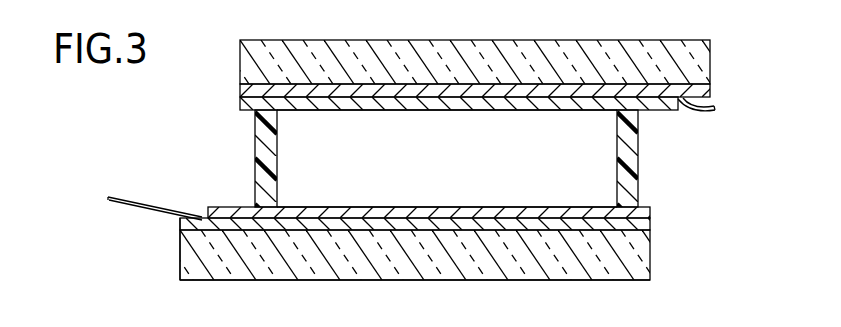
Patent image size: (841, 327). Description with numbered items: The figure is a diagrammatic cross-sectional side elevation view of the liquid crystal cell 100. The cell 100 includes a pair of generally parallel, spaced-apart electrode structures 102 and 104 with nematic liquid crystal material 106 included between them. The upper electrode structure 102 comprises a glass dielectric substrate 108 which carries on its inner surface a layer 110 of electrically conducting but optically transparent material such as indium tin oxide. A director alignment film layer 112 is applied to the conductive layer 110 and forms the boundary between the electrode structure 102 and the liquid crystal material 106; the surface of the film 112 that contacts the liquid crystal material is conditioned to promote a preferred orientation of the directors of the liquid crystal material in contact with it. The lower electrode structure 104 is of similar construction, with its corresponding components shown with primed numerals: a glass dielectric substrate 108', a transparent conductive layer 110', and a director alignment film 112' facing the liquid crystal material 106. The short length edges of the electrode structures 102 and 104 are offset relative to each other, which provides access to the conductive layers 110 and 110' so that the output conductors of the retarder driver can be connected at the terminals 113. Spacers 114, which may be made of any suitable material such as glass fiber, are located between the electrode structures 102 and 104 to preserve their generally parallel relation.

The liquid crystal cell 100 is at (176, 283).
The electrode structure 102 is at (240, 58).
The electrode structure 104 is at (363, 282).
The nematic liquid crystal material 106 is at (420, 171).
The glass dielectric substrate 108 is at (475, 43).
The glass dielectric substrate 108' is at (379, 255).
The conductive layer 110 is at (440, 83).
The conductive layer 110' is at (381, 220).
The director alignment film layer 112 is at (424, 106).
The director alignment film layer 112' is at (395, 198).
The terminals 113 is at (125, 196).
The spacers 114 is at (274, 153).